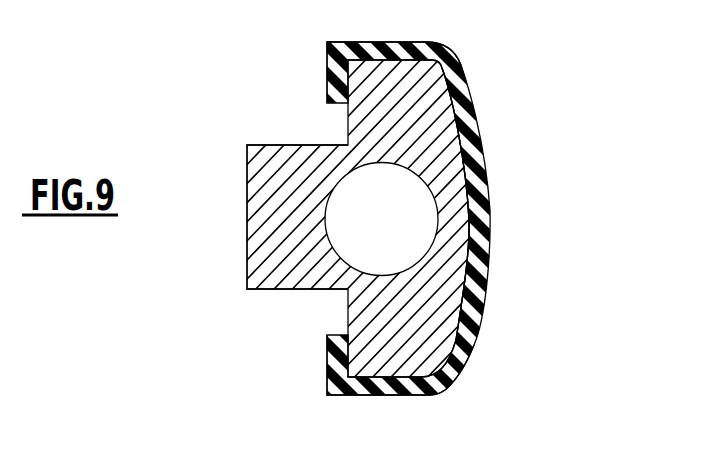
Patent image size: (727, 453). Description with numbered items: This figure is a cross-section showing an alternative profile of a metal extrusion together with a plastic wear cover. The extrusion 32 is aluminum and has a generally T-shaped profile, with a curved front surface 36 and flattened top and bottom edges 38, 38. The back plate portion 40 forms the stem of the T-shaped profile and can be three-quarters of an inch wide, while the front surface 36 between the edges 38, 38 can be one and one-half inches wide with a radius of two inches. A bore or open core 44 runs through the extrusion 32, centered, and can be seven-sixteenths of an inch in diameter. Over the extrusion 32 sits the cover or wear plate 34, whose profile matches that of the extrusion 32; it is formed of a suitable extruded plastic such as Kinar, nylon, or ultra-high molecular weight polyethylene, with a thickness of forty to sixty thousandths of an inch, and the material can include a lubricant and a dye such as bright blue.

The extrusion 32 is at (317, 135).
The cover or wear plate 34 is at (490, 181).
The curved front surface 36 is at (458, 131).
The flattened top and bottom edges 38 is at (382, 60).
The back plate portion 40 is at (247, 223).
The bore or open core 44 is at (399, 204).